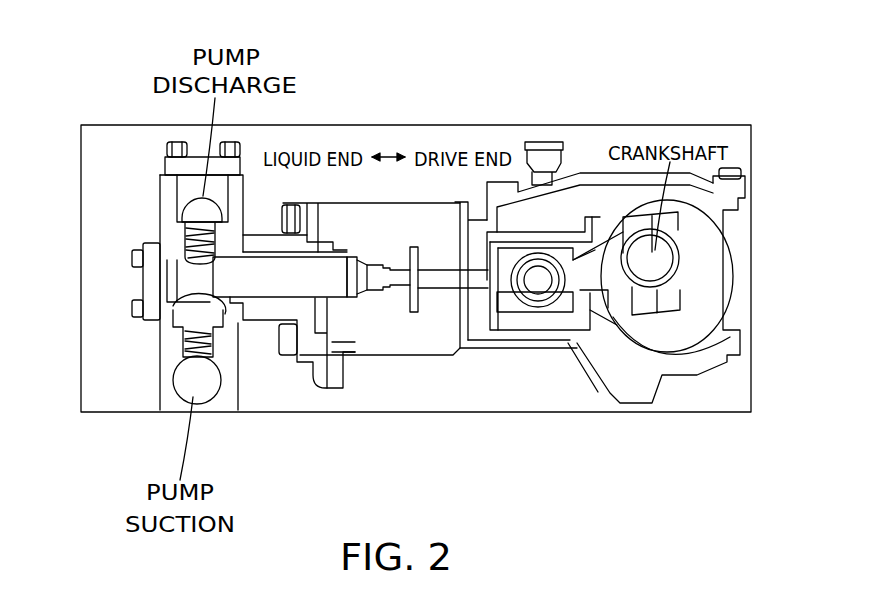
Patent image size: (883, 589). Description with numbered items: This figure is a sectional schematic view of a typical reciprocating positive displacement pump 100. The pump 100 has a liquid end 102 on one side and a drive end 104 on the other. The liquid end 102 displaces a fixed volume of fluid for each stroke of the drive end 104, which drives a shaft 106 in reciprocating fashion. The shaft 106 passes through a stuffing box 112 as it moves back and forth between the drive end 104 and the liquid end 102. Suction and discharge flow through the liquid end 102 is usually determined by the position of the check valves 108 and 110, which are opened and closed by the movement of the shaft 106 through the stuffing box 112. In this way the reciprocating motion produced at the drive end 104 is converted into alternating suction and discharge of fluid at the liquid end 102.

The reciprocating positive displacement pump 100 is at (498, 110).
The liquid end 102 is at (118, 182).
The drive end 104 is at (778, 200).
The shaft 106 is at (308, 280).
The check valve 108 is at (160, 208).
The check valve 110 is at (182, 337).
The stuffing box 112 is at (258, 297).